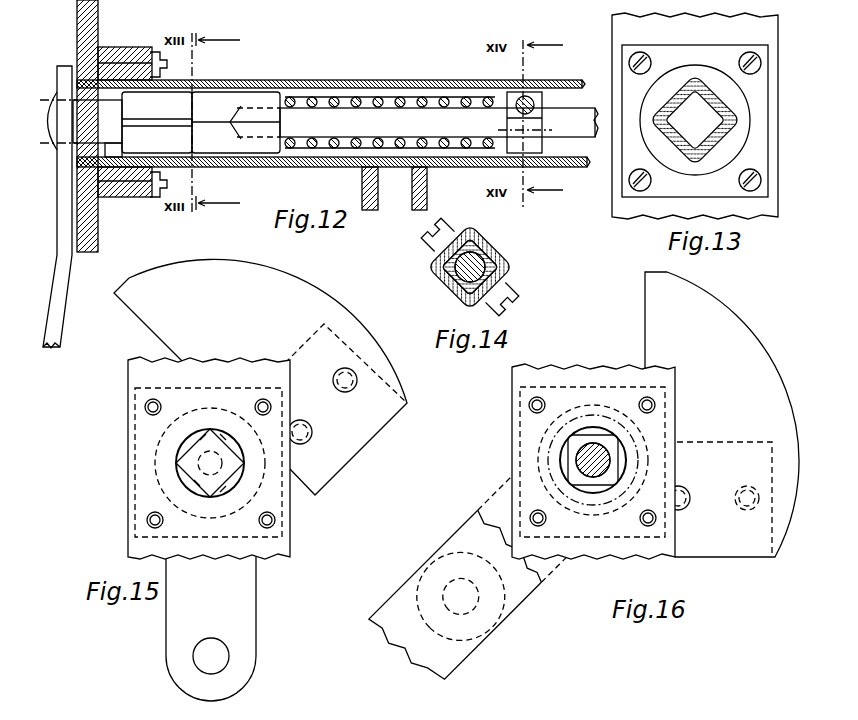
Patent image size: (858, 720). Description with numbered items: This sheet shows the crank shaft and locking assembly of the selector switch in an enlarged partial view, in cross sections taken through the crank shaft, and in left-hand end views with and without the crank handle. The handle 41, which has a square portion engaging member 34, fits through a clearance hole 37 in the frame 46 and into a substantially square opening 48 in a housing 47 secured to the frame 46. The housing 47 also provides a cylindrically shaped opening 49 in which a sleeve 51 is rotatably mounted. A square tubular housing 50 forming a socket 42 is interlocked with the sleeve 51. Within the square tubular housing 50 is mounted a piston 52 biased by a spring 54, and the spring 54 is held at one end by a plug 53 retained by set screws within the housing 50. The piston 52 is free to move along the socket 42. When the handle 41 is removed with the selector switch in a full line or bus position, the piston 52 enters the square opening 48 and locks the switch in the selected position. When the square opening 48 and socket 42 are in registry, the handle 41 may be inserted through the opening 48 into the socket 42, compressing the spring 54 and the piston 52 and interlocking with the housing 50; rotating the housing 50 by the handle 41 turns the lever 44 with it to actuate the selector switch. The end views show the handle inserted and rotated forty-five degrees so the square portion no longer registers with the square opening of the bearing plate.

In FIG. 12, the engaging member 34 is at (194, 135).
In FIG. 13, the engaging member 34 is at (708, 142).
In FIG. 16, the engaging member 34 is at (617, 460).
In FIG. 12, the clearance hole 37 is at (75, 96).
In FIG. 15, the clearance hole 37 is at (192, 440).
In FIG. 12, the handle 41 is at (63, 315).
In FIG. 12, the socket 42 is at (209, 155).
In FIG. 13, the socket 42 is at (696, 88).
In FIG. 15, the socket 42 is at (215, 503).
In FIG. 12, the lever 44 is at (412, 204).
In FIG. 15, the lever 44 is at (254, 594).
In FIG. 16, the lever 44 is at (551, 568).
In FIG. 12, the frame 46 is at (98, 14).
In FIG. 15, the frame 46 is at (133, 377).
In FIG. 16, the frame 46 is at (570, 367).
In FIG. 12, the housing 47 is at (117, 47).
In FIG. 13, the housing 47 is at (660, 52).
In FIG. 15, the housing 47 is at (133, 492).
In FIG. 16, the housing 47 is at (510, 429).
In FIG. 12, the square opening 48 is at (108, 152).
In FIG. 12, the cylindrically shaped opening 49 is at (134, 181).
In FIG. 13, the cylindrically shaped opening 49 is at (690, 75).
In FIG. 15, the cylindrically shaped opening 49 is at (187, 410).
In FIG. 16, the cylindrically shaped opening 49 is at (617, 403).
In FIG. 12, the square tubular housing 50 is at (332, 80).
In FIG. 13, the square tubular housing 50 is at (720, 141).
In FIG. 14, the square tubular housing 50 is at (496, 246).
In FIG. 15, the square tubular housing 50 is at (160, 462).
In FIG. 16, the square tubular housing 50 is at (568, 412).
In FIG. 12, the sleeve 51 is at (135, 62).
In FIG. 12, the piston 52 is at (231, 94).
In FIG. 15, the piston 52 is at (200, 478).
In FIG. 12, the plug 53 is at (543, 119).
In FIG. 14, the plug 53 is at (443, 293).
In FIG. 12, the spring 54 is at (414, 96).